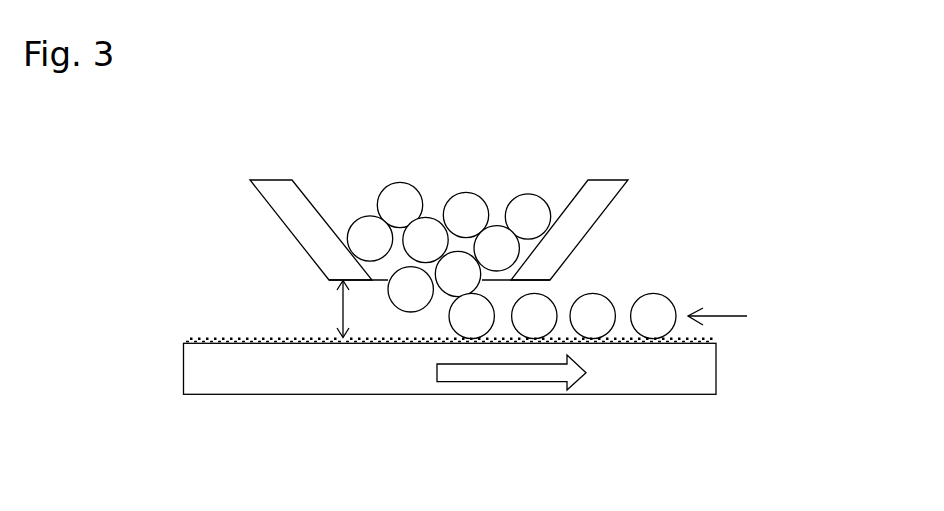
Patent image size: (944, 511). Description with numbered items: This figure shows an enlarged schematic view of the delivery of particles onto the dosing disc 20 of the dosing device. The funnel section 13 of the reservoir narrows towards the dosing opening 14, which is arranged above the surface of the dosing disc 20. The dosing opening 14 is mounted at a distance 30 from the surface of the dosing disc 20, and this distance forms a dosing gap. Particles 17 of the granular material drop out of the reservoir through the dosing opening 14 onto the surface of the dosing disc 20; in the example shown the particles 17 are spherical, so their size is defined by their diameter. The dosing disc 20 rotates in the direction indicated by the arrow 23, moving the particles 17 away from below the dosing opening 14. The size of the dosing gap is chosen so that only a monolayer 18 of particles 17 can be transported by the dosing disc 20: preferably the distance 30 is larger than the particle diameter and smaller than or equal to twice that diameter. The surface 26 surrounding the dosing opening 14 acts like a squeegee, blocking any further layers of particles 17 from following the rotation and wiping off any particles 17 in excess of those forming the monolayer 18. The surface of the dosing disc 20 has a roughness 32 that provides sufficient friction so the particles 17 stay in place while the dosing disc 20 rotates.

The funnel section 13 is at (295, 213).
The dosing opening 14 is at (390, 265).
The particles 17 is at (650, 302).
The monolayer 18 is at (742, 312).
The dosing disc 20 is at (217, 369).
The arrow 23 is at (547, 372).
The surface surrounding the dosing opening 26 is at (541, 283).
The distance 30 is at (335, 312).
The roughness 32 is at (250, 327).